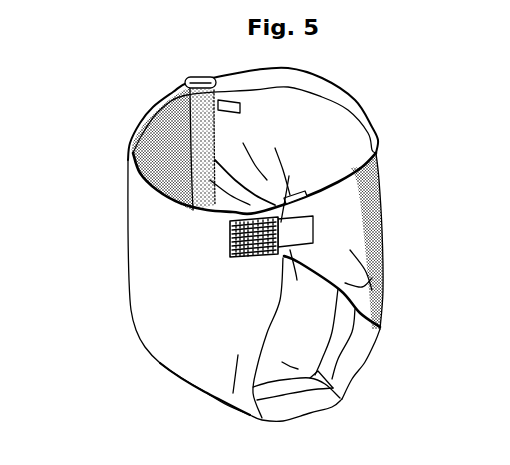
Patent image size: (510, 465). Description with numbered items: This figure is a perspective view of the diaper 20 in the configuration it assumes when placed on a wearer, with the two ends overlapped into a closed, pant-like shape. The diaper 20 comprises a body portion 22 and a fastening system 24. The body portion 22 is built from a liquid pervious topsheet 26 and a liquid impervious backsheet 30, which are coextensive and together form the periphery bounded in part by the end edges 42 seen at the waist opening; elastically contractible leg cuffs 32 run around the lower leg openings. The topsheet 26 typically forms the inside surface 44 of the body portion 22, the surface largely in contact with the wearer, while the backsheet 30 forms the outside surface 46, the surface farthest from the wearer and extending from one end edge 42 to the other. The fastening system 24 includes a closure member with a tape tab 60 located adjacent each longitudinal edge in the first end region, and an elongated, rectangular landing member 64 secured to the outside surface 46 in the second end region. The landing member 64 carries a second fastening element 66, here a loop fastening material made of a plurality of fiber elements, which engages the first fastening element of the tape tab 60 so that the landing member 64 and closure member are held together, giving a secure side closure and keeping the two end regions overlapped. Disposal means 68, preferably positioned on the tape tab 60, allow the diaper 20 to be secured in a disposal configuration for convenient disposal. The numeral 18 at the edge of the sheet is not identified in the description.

The reference (partially visible) 18 is at (40, 5).
The diaper 20 is at (229, 232).
The body portion 22 is at (128, 256).
The fastening system 24 is at (278, 262).
The topsheet 26 is at (343, 108).
The backsheet 30 is at (150, 327).
The leg cuffs 32 is at (330, 381).
The end edges 42 is at (147, 111).
The inside surface 44 is at (311, 141).
The outside surface 46 is at (196, 295).
The tape tab 60 is at (234, 107).
The landing member 64 is at (225, 262).
The second fastening element 66 is at (230, 237).
The disposal means 68 is at (291, 188).